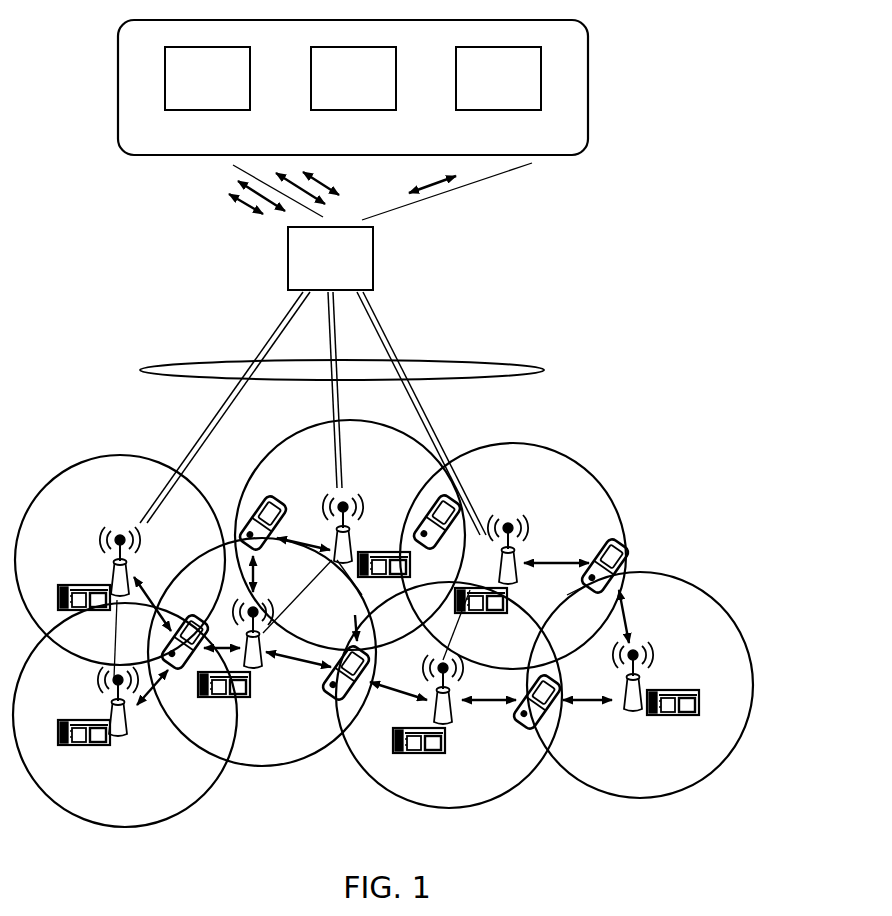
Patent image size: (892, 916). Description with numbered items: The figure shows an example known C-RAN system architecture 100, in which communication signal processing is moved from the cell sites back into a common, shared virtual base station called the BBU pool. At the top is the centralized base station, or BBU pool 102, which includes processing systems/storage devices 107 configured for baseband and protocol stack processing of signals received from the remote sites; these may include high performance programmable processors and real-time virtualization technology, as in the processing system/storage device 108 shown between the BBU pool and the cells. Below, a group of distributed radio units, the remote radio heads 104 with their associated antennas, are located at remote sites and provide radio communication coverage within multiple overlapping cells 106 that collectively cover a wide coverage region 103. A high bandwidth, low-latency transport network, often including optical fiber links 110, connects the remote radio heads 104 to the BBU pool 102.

The C-RAN system architecture 100 is at (652, 200).
The centralized base station (BBU pool) 102 is at (118, 58).
The coverage region 103 is at (80, 406).
The remote radio head 104 is at (93, 535).
The cell 106 is at (118, 456).
The processing system/storage device 107 is at (192, 92).
The processing system/storage device of the BBU 108 is at (315, 271).
The optical fiber link 110 is at (175, 362).